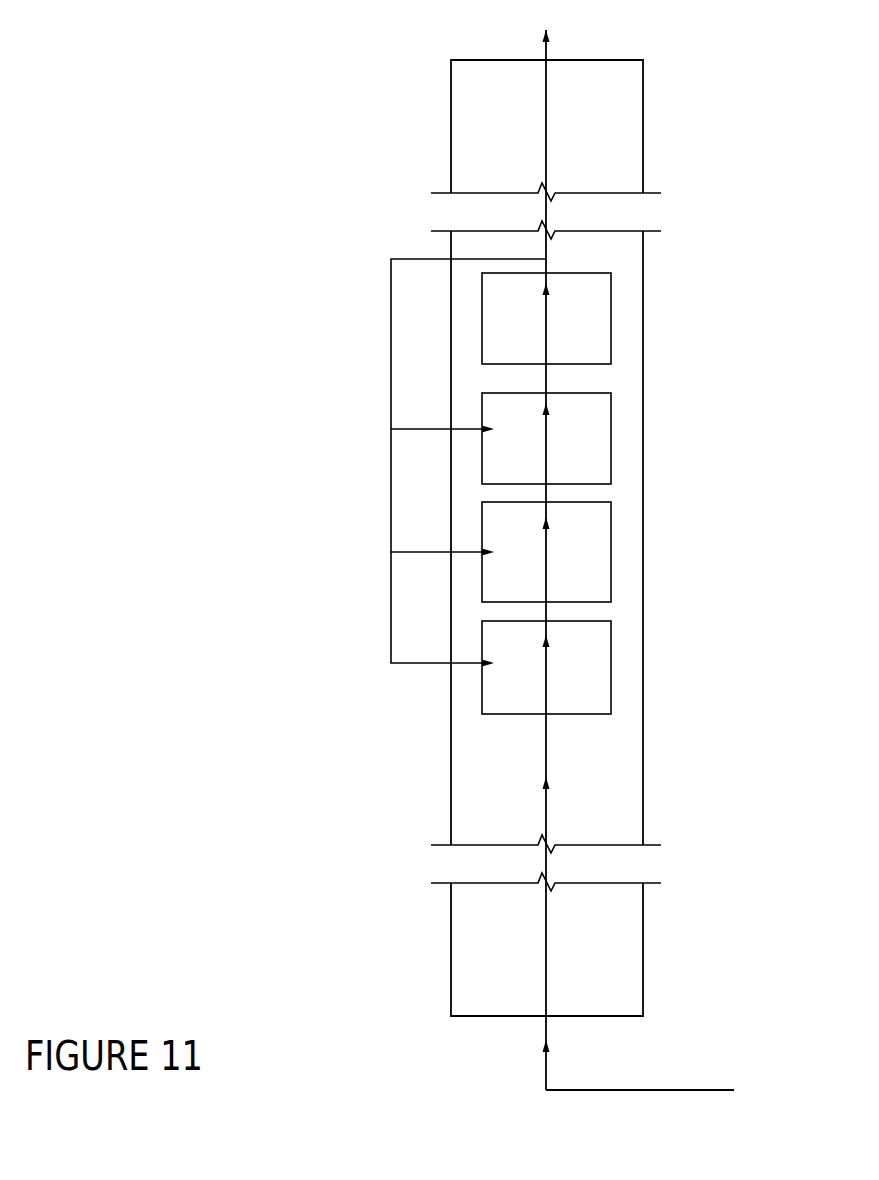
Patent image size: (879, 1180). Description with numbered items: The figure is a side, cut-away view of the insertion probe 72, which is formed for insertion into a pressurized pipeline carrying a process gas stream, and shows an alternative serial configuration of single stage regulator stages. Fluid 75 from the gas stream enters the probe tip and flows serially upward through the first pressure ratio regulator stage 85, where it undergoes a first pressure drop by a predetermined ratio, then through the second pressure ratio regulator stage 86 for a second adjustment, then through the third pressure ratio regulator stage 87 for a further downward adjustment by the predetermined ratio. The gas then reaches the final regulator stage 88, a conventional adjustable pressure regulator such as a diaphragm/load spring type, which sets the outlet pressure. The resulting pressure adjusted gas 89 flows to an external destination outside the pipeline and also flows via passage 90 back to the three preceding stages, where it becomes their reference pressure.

The probe 72 is at (448, 759).
The fluid 75 is at (678, 1083).
The first pressure ratio regulator stage 85 is at (598, 663).
The second pressure ratio regulator stage 86 is at (602, 543).
The third pressure ratio regulator stage 87 is at (589, 419).
The final regulator stage 88 is at (595, 330).
The pressure adjusted gas 89 is at (546, 263).
The passage 90 is at (388, 332).